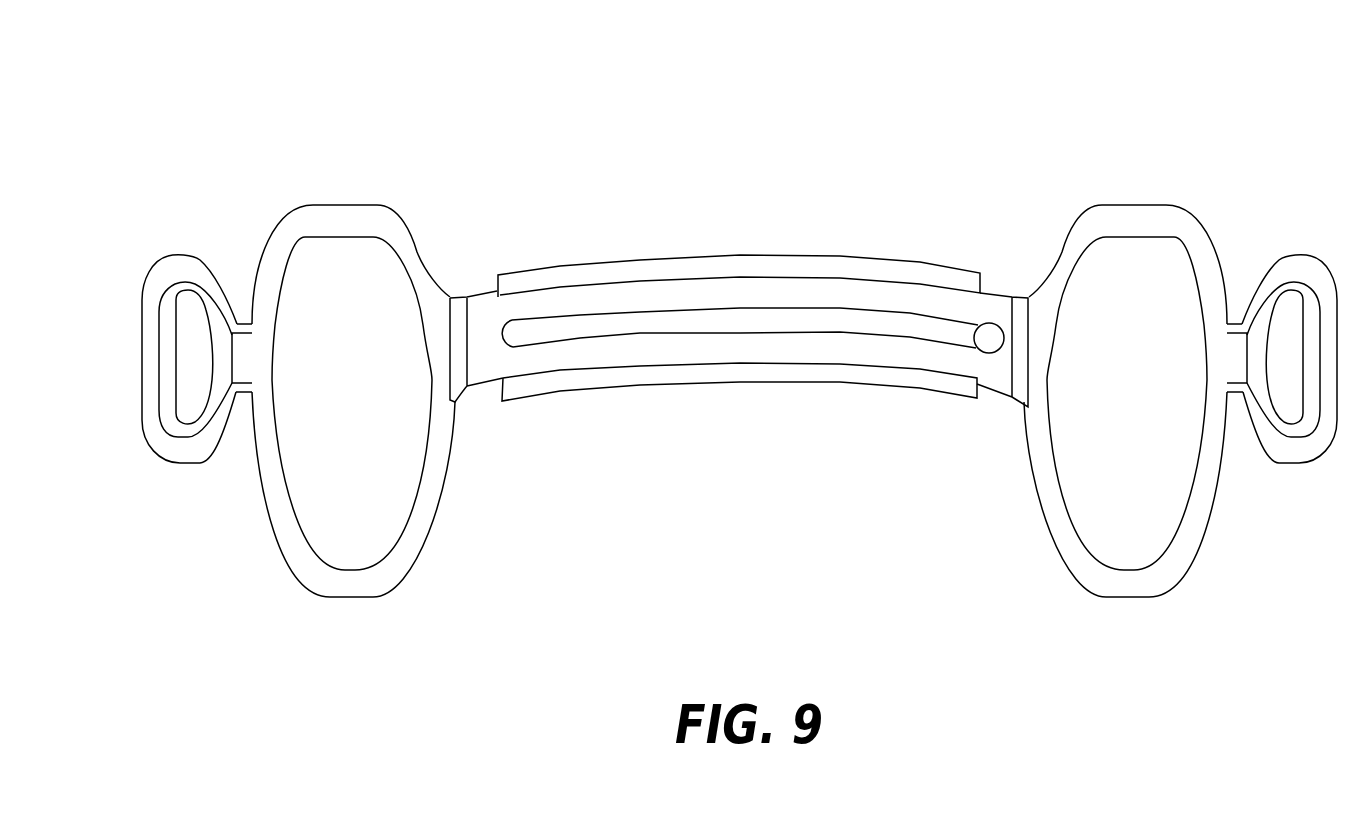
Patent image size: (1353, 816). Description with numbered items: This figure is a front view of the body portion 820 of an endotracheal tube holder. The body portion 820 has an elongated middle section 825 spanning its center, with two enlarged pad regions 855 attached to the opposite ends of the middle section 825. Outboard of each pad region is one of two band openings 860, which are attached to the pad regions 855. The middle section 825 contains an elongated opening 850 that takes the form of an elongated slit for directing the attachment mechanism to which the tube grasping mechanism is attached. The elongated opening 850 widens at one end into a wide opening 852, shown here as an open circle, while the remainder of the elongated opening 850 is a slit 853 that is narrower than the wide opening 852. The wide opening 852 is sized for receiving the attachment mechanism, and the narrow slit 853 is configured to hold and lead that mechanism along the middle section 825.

The body portion 820 is at (747, 130).
The elongated middle section 825 is at (647, 295).
The elongated opening 850 is at (827, 320).
The wide opening 852 is at (987, 345).
The slit 853 is at (720, 320).
The enlarged pad regions 855 is at (348, 223).
The band openings 860 is at (163, 277).